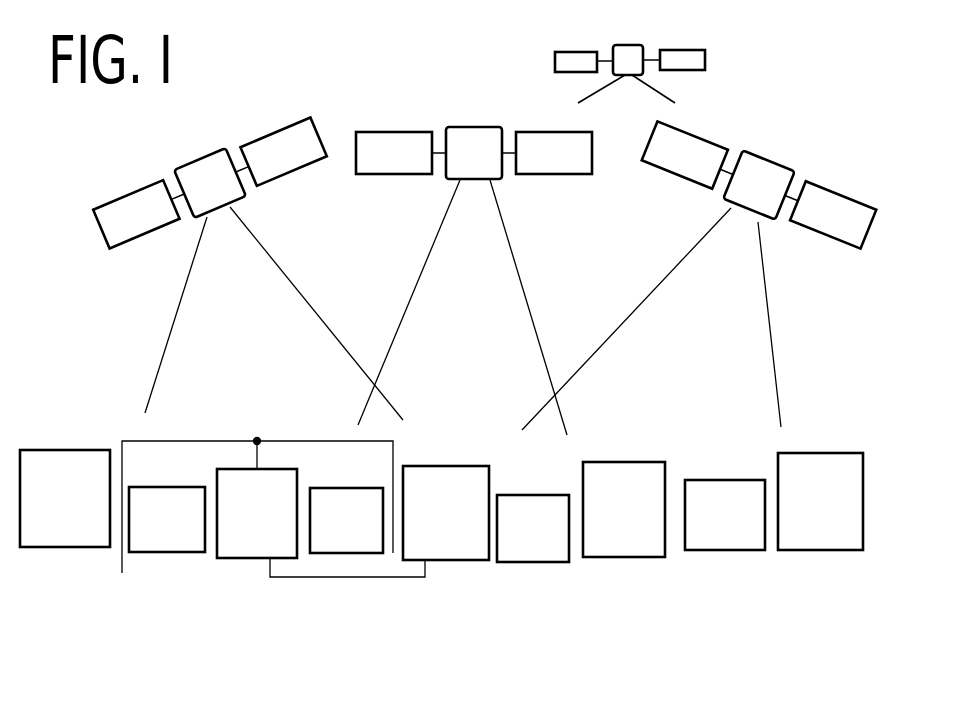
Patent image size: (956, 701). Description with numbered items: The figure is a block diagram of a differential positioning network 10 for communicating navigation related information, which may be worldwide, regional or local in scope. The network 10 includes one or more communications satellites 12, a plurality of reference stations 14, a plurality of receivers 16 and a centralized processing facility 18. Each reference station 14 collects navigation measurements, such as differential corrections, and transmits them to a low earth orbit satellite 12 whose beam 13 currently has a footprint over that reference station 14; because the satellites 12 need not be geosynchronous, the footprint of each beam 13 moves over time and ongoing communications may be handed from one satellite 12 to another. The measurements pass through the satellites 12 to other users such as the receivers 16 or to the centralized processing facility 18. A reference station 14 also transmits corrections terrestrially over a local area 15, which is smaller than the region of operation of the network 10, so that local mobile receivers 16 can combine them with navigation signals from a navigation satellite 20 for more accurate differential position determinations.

The network 10 is at (423, 97).
The satellite 12 is at (190, 163).
The beam 13 is at (251, 228).
The reference station 14 is at (52, 450).
The local area 15 is at (185, 441).
The receiver 16 is at (155, 552).
The centralized processing facility 18 is at (442, 560).
The navigation satellite 20 is at (627, 45).